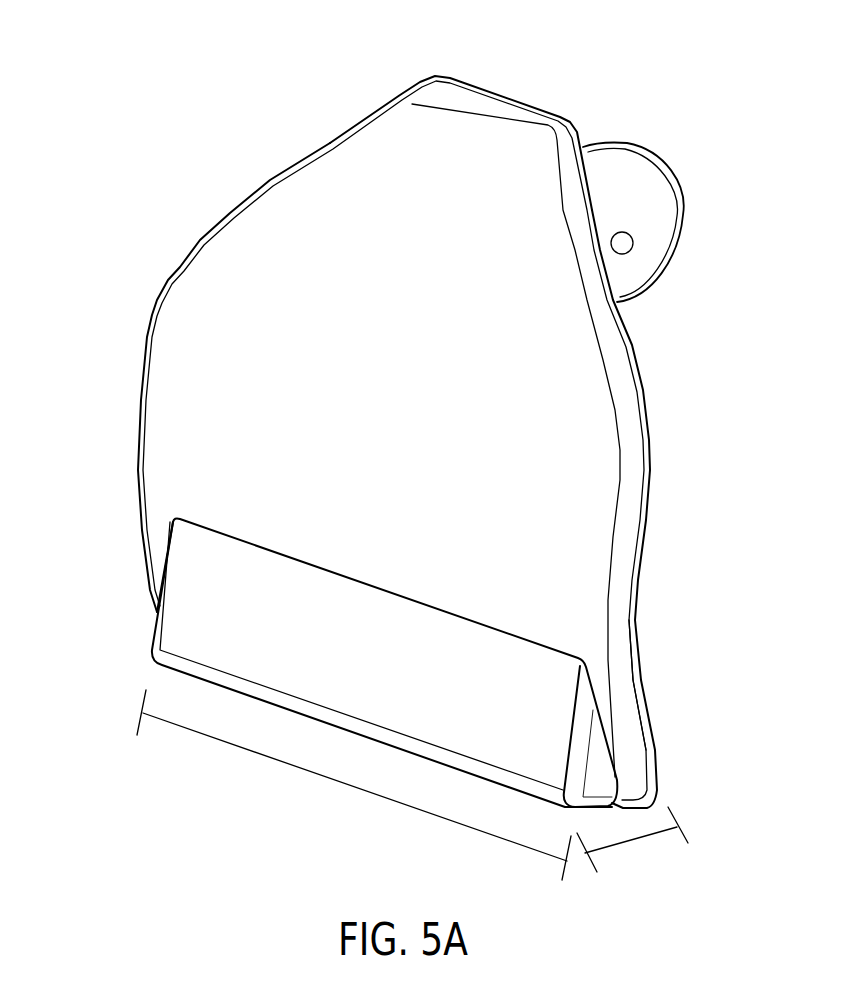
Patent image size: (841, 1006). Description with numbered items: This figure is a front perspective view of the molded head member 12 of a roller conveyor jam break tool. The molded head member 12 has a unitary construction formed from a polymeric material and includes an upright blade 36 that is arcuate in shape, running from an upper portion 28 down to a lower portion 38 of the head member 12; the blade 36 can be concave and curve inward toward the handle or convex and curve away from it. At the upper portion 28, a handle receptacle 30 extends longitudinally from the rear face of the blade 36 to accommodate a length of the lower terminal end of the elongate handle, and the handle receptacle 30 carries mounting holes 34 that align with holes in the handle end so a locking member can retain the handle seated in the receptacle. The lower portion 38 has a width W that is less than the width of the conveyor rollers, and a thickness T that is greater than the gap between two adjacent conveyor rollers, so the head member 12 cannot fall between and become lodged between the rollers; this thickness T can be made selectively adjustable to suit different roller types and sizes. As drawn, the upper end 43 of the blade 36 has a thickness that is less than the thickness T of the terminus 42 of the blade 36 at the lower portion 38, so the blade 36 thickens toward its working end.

The molded head member 12 is at (117, 192).
The upper portion 28 is at (636, 362).
The handle receptacle 30 is at (663, 175).
The mounting holes 34 is at (627, 247).
The upright blade 36 is at (350, 465).
The lower portion 38 is at (647, 695).
The terminus 42 is at (435, 762).
The upper end 43 is at (501, 98).
The width W is at (328, 778).
The thickness T is at (637, 838).